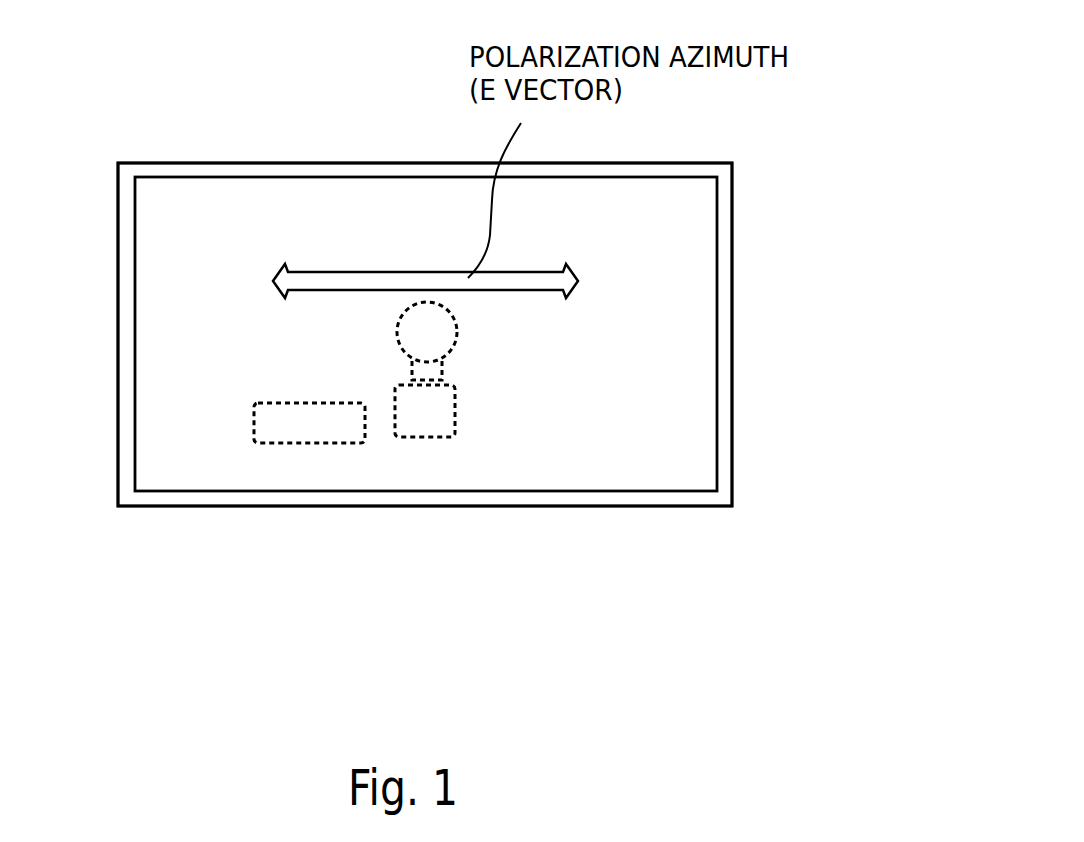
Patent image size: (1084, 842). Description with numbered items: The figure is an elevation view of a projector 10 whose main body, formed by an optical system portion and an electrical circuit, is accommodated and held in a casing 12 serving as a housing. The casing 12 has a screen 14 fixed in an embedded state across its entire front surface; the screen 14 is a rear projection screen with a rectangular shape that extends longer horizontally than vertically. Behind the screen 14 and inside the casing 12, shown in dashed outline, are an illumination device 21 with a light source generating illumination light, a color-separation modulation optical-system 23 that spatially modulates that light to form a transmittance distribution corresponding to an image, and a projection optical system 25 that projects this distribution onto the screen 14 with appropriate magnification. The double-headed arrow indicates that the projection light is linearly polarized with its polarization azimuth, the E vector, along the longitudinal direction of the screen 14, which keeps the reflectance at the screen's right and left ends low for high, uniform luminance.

The projector 10 is at (799, 164).
The casing 12 is at (733, 330).
The screen 14 is at (700, 223).
The illumination device 21 is at (295, 443).
The color-separation modulation optical-system 23 is at (415, 438).
The projection optical system 25 is at (448, 348).